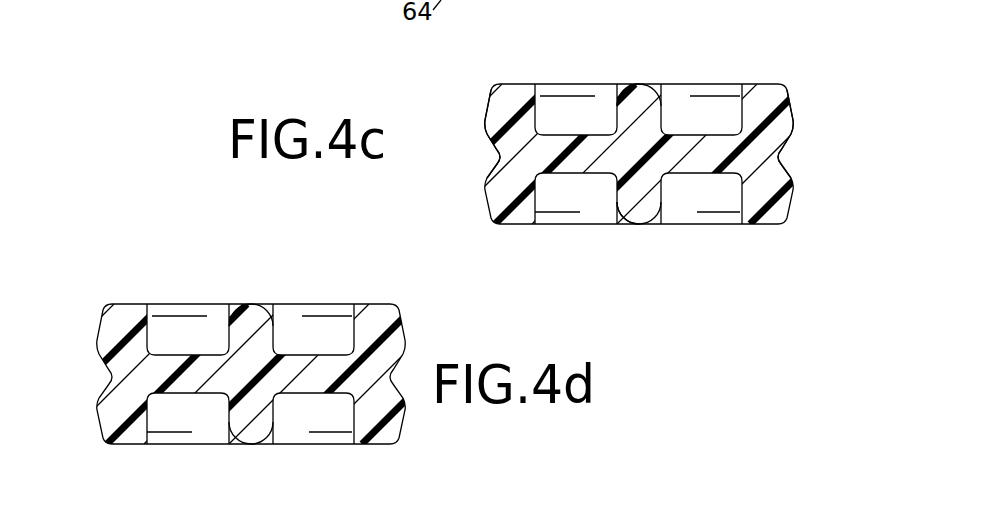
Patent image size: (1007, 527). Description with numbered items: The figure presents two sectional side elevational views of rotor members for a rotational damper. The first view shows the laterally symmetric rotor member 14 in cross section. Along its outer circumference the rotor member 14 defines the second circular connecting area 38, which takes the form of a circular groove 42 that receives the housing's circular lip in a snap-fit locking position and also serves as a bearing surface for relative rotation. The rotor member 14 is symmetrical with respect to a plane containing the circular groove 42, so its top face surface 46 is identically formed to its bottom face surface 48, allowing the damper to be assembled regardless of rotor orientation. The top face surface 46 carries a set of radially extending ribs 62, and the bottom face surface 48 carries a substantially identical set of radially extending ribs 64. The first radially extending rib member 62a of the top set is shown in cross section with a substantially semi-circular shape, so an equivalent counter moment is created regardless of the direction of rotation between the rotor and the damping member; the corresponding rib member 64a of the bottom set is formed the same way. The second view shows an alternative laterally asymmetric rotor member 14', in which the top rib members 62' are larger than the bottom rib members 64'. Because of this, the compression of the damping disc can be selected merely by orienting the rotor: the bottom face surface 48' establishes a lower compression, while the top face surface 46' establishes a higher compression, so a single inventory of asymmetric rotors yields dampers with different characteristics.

In FIG. 4c, the rotor member 14 is at (644, 112).
In FIG. 4c, the second circular connecting area 38 is at (487, 148).
In FIG. 4c, the circular groove 42 is at (494, 172).
In FIG. 4c, the top face surface 46 is at (728, 67).
In FIG. 4c, the bottom face surface 48 is at (701, 237).
In FIG. 4c, the radially extending ribs 62 is at (673, 53).
In FIG. 4c, the first radially extending rib member 62a is at (618, 89).
In FIG. 4c, the radially extending ribs 64 is at (616, 253).
In FIG. 4c, the first radially extending rib member of bottom set 64a is at (640, 205).
In FIG. 4d, the rotor member 14' is at (269, 339).
In FIG. 4d, the top face surface 46' is at (313, 294).
In FIG. 4d, the bottom face surface 48' is at (364, 442).
In FIG. 4d, the top rib members 62' is at (231, 280).
In FIG. 4d, the bottom rib members 64' is at (214, 457).